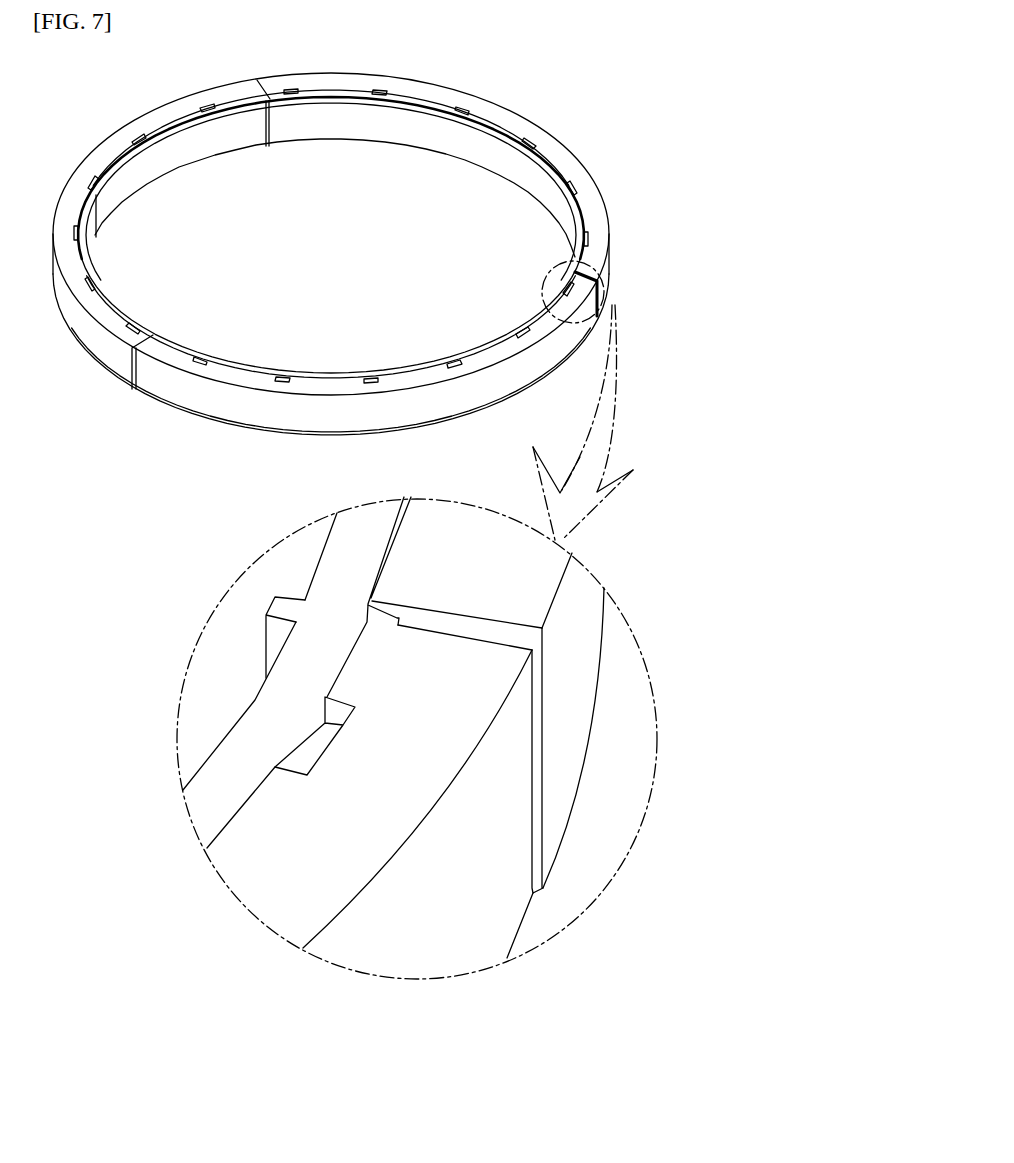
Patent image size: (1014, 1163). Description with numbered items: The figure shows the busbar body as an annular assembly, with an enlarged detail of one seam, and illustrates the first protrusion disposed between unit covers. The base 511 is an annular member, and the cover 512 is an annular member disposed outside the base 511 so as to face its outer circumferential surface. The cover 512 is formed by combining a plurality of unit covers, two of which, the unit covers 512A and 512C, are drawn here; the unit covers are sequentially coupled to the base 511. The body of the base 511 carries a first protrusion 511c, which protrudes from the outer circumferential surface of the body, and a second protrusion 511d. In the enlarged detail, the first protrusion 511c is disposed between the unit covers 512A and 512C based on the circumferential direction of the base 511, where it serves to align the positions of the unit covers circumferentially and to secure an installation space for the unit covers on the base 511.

The base 511 is at (331, 518).
The first protrusion 511c is at (371, 603).
The second protrusion 511d is at (286, 608).
The cover 512 is at (440, 515).
The unit cover 512A is at (562, 163).
The unit cover 512C is at (592, 276).